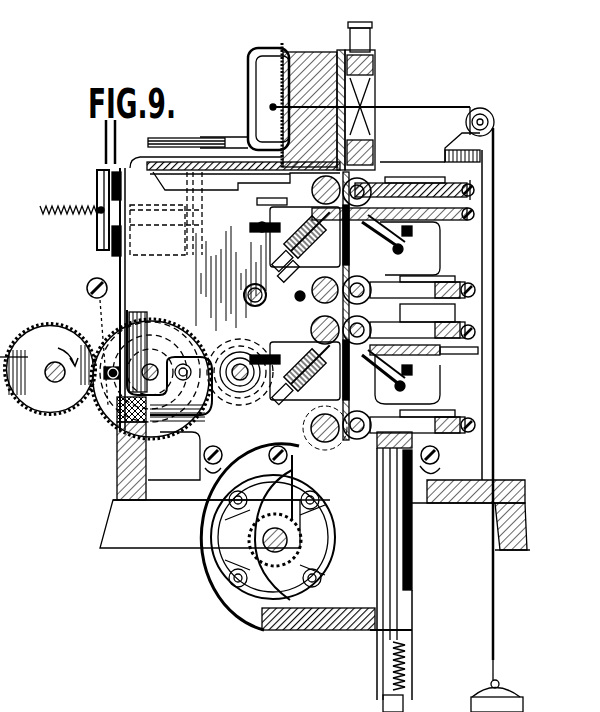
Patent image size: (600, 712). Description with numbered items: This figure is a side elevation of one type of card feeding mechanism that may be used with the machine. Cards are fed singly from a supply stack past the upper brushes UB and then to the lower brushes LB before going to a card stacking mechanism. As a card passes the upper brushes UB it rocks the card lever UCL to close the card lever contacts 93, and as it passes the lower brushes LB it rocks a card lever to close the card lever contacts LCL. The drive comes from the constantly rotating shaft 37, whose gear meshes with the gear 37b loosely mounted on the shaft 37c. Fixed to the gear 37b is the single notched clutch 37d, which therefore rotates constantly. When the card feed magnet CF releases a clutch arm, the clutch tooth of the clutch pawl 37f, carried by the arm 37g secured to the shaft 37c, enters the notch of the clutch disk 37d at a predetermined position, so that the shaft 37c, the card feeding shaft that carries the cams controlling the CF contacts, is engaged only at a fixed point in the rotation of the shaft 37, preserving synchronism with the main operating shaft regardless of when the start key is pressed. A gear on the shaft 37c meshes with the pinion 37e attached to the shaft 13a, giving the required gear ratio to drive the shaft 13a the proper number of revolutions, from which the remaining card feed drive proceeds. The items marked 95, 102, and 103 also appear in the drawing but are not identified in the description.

The spring anchor leads 95 is at (118, 162).
The card feed magnet CF is at (135, 205).
The constantly rotating shaft 37 is at (57, 382).
The gear 37b is at (148, 322).
The shaft 37c is at (152, 370).
The single notched clutch 37d is at (172, 362).
The arm 37g is at (151, 379).
The pinion 37e is at (240, 398).
The clutch pawl 37f is at (110, 408).
The shaft 13a is at (240, 368).
The upper brushes UB is at (296, 243).
The lower brushes LB is at (295, 372).
The card lever contacts 93 is at (378, 235).
The card lever UCL is at (401, 245).
The card lever contacts LCL is at (420, 374).
The contact bar 102 is at (386, 292).
The contact bar 103 is at (417, 422).